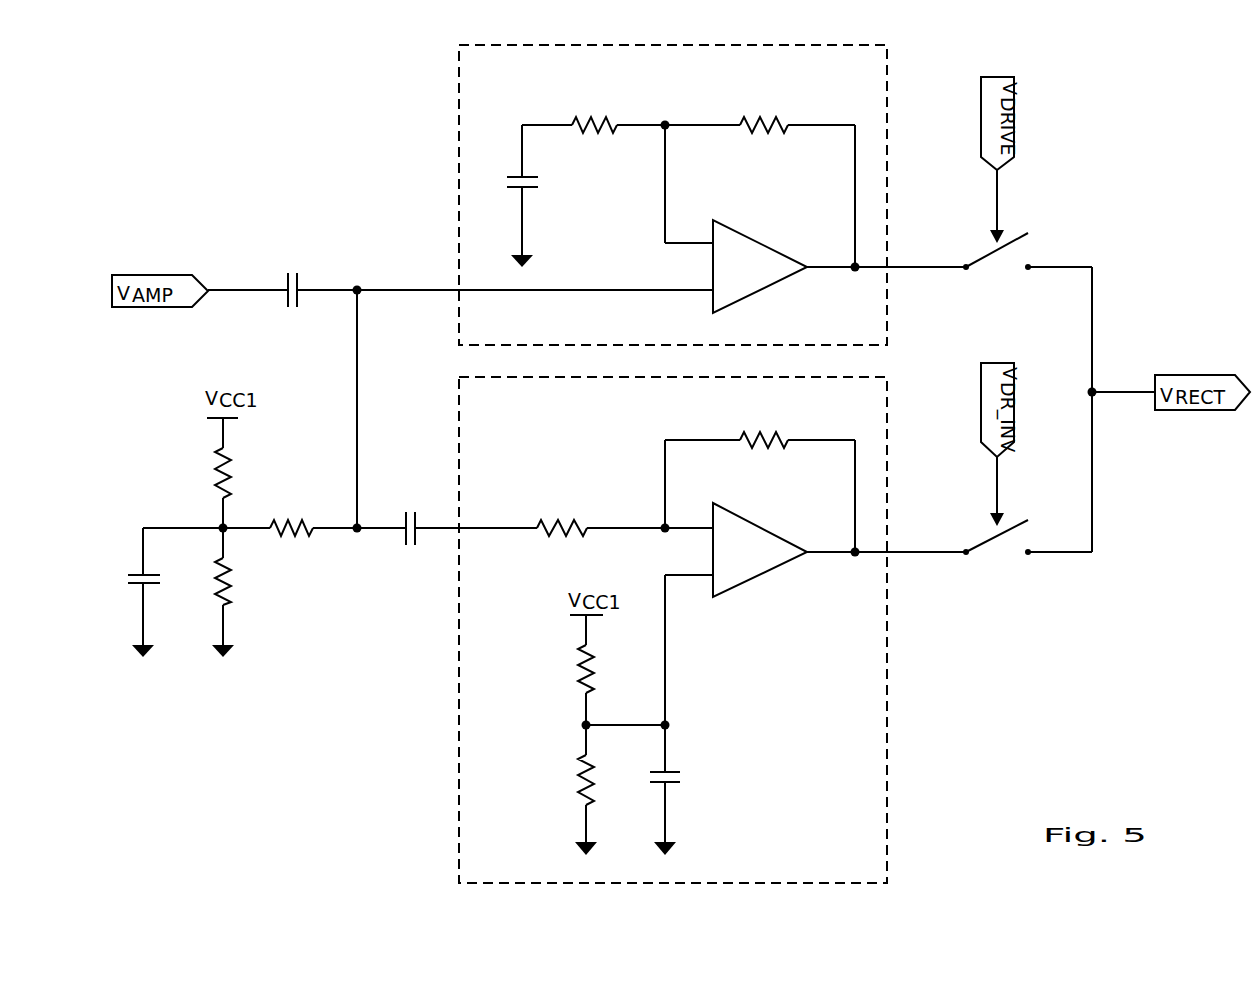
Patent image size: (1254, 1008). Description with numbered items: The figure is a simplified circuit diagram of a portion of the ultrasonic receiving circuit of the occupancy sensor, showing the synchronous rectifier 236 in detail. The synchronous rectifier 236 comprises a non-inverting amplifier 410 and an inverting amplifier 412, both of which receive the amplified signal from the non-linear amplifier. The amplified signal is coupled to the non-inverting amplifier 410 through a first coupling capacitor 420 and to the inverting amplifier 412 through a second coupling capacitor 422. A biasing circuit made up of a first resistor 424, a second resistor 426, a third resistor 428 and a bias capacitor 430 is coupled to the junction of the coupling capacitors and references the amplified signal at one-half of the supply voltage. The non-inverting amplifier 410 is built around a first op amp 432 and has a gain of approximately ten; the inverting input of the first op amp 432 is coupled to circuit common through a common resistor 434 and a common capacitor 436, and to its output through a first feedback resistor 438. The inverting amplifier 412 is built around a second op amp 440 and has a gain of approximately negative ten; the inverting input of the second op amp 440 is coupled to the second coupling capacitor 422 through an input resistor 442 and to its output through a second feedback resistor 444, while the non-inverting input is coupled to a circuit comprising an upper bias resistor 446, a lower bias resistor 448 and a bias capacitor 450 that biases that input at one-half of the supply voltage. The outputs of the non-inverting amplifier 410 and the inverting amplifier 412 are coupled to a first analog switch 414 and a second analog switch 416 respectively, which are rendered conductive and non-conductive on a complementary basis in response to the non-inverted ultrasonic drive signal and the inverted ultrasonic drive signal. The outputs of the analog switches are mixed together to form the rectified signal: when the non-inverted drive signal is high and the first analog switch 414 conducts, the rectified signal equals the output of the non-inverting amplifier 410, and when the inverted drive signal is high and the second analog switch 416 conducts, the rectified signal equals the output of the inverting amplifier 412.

The synchronous rectifier 236 is at (285, 105).
The non-inverting amplifier 410 is at (458, 140).
The inverting amplifier 412 is at (460, 653).
The analog switch 414 is at (1032, 248).
The analog switch 416 is at (1012, 556).
The capacitor 420 is at (298, 277).
The capacitor 422 is at (411, 515).
The resistor 424 is at (312, 520).
The resistor 426 is at (213, 475).
The resistor 428 is at (230, 585).
The capacitor 430 is at (153, 585).
The op amp 432 is at (762, 260).
The resistor 434 is at (613, 130).
The capacitor 436 is at (532, 190).
The resistor 438 is at (760, 122).
The op amp 440 is at (752, 560).
The resistor 442 is at (575, 520).
The resistor 444 is at (780, 443).
The resistor 446 is at (578, 680).
The resistor 448 is at (578, 782).
The capacitor 450 is at (670, 782).